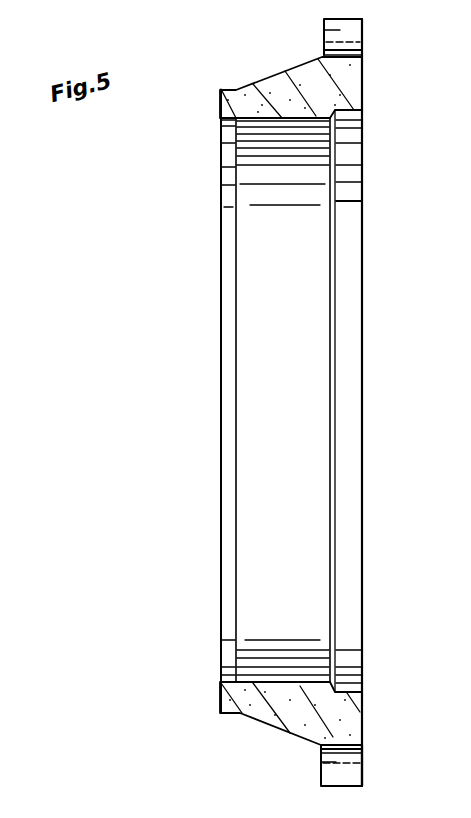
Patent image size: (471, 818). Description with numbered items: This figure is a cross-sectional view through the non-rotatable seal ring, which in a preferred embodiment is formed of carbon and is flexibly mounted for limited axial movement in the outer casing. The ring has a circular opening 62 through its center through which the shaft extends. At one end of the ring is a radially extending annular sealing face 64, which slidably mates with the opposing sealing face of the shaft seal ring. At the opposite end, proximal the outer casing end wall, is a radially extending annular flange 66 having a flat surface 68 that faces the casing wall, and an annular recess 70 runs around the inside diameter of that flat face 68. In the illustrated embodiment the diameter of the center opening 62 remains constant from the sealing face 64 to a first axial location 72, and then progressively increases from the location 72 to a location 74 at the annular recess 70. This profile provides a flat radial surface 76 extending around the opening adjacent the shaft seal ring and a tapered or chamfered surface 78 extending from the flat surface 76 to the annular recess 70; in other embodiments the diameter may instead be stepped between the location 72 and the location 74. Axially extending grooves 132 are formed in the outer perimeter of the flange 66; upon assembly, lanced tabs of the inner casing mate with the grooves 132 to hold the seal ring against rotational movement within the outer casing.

The circular opening 62 is at (268, 354).
The annular sealing face 64 is at (220, 100).
The annular flange 66 is at (363, 33).
The flat surface 68 is at (362, 765).
The annular recess 70 is at (340, 122).
The first axial location 72 is at (236, 325).
The location at the annular recess 74 is at (330, 440).
The flat radial surface 76 is at (228, 213).
The tapered or chamfered surface 78 is at (292, 118).
The axially extending grooves 132 is at (336, 33).